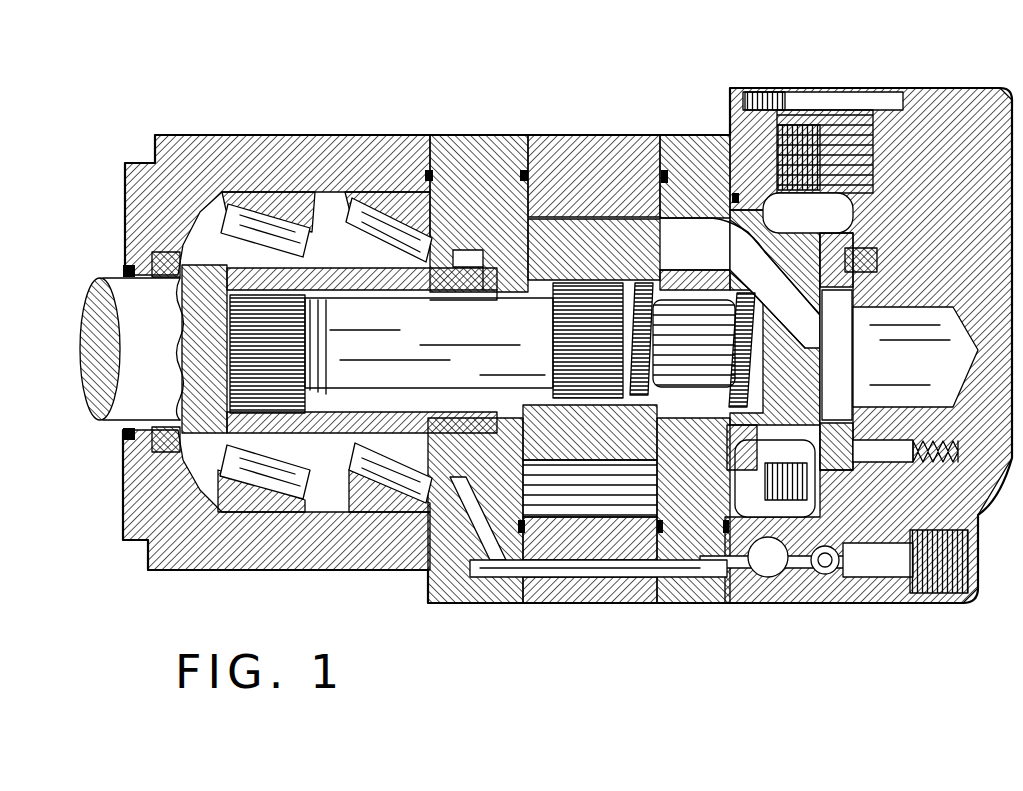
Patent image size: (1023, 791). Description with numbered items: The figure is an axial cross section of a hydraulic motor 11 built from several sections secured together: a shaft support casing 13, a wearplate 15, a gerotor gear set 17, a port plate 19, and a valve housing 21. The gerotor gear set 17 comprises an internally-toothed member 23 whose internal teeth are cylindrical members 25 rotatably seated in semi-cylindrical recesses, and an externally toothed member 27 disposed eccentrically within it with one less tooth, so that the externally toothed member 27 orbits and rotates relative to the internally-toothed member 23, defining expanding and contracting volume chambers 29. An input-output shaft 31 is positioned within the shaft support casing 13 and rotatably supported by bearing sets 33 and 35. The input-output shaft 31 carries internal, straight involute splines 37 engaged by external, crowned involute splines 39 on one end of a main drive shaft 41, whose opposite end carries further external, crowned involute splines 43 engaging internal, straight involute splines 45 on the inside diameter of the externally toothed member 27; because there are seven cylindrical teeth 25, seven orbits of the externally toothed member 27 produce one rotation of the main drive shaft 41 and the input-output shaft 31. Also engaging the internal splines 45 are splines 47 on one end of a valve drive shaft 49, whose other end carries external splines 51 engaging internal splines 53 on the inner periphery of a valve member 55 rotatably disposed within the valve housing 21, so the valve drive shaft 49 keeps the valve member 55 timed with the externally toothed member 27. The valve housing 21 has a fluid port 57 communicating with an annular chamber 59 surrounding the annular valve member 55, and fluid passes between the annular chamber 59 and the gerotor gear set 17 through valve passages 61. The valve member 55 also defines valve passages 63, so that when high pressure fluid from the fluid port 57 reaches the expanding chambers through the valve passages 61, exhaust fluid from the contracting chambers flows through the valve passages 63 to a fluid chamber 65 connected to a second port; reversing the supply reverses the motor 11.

The hydraulic motor 11 is at (333, 86).
The shaft support casing 13 is at (262, 150).
The wearplate 15 is at (494, 152).
The gerotor gear set 17 is at (616, 120).
The port plate 19 is at (704, 152).
The valve housing 21 is at (930, 112).
The internally-toothed member 23 is at (583, 150).
The cylindrical members 25 is at (579, 492).
The externally toothed member 27 is at (594, 249).
The volume chambers 29 is at (578, 218).
The input-output shaft 31 is at (118, 360).
The bearing set 33 is at (263, 218).
The bearing set 35 is at (390, 222).
The internal straight involute splines 37 is at (345, 293).
The external crowned involute splines 39 is at (293, 354).
The main drive shaft 41 is at (429, 343).
The external crowned involute splines 43 is at (570, 340).
The internal straight involute splines 45 is at (537, 282).
The splines 47 is at (656, 323).
The valve drive shaft 49 is at (703, 367).
The external splines 51 is at (754, 338).
The internal splines 53 is at (742, 433).
The valve member 55 is at (830, 396).
The fluid port 57 is at (830, 128).
The annular chamber 59 is at (838, 217).
The valve passages 61 is at (755, 462).
The valve passages 63 is at (784, 278).
The fluid chamber 65 is at (915, 357).